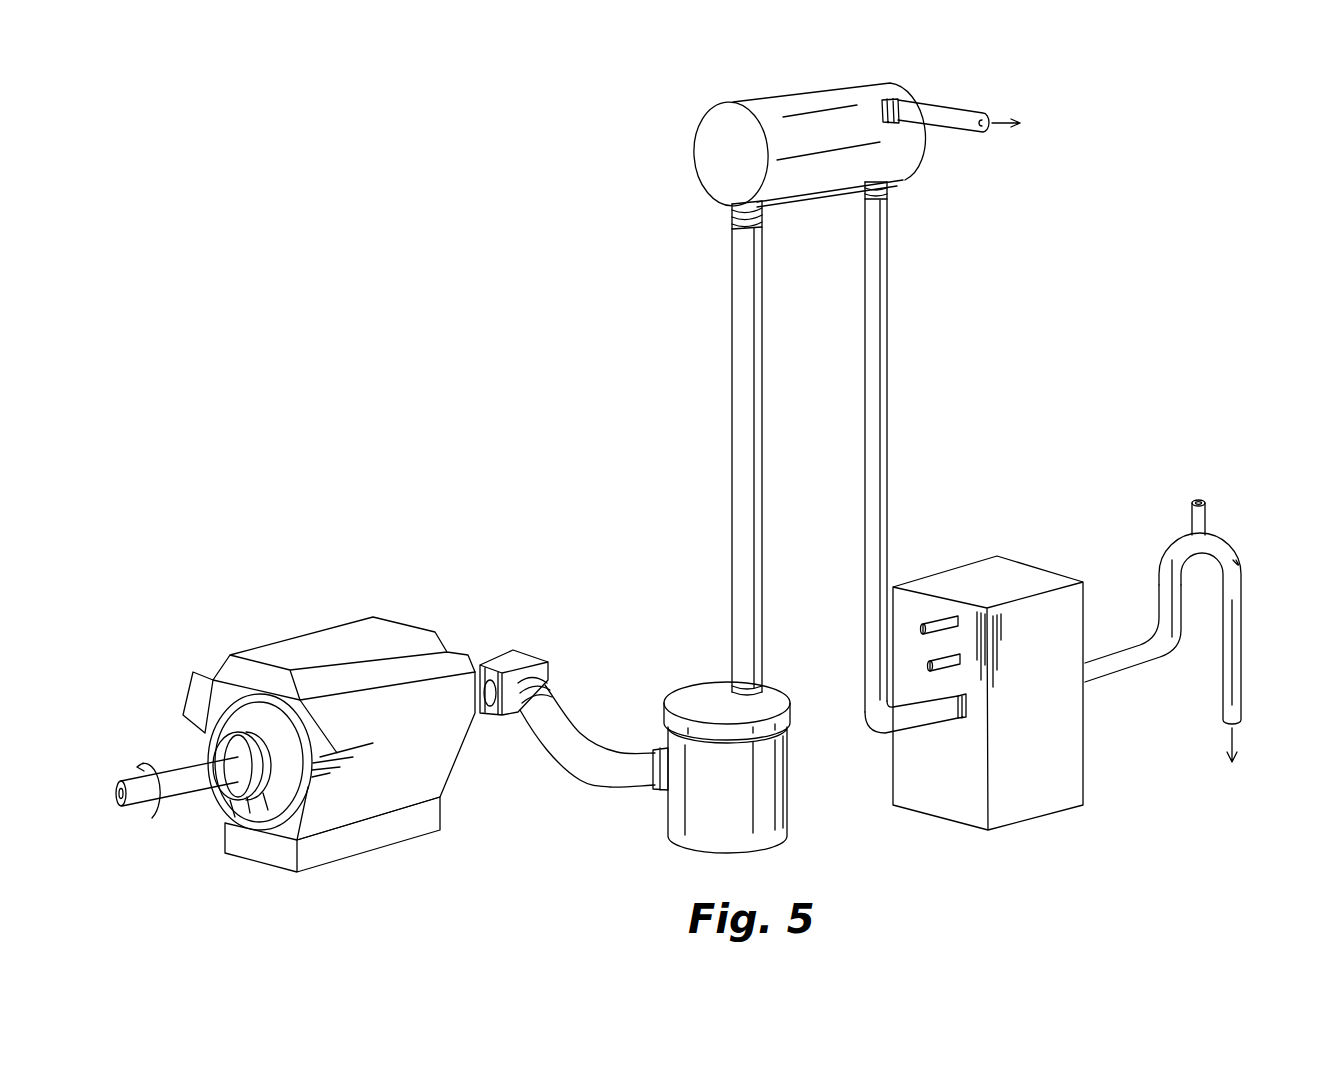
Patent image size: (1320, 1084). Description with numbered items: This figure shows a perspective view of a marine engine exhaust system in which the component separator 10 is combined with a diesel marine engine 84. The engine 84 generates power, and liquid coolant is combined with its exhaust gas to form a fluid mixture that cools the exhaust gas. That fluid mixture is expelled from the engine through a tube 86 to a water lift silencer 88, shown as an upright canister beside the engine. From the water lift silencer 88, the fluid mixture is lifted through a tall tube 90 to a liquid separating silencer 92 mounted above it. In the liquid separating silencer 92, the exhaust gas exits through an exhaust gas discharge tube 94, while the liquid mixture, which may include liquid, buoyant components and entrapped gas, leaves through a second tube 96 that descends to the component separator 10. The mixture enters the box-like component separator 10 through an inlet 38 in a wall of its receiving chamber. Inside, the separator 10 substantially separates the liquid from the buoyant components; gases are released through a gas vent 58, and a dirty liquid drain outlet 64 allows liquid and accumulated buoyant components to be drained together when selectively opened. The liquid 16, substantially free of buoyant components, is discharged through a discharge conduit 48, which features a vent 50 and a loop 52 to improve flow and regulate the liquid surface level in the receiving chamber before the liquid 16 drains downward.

The component separator 10 is at (1000, 550).
The liquid 16 is at (1233, 731).
The inlet 38 is at (912, 733).
The discharge conduit 48 is at (1113, 677).
The vent 50 is at (1207, 513).
The loop 52 is at (1240, 565).
The gas vent 58 is at (933, 618).
The dirty liquid drain outlet 64 is at (930, 661).
The diesel marine engine 84 is at (410, 621).
The tube 86 is at (568, 790).
The water lift silencer 88 is at (704, 685).
The tube 90 is at (732, 285).
The liquid separating silencer 92 is at (712, 152).
The exhaust gas discharge tube 94 is at (966, 108).
The second tube 96 is at (887, 280).